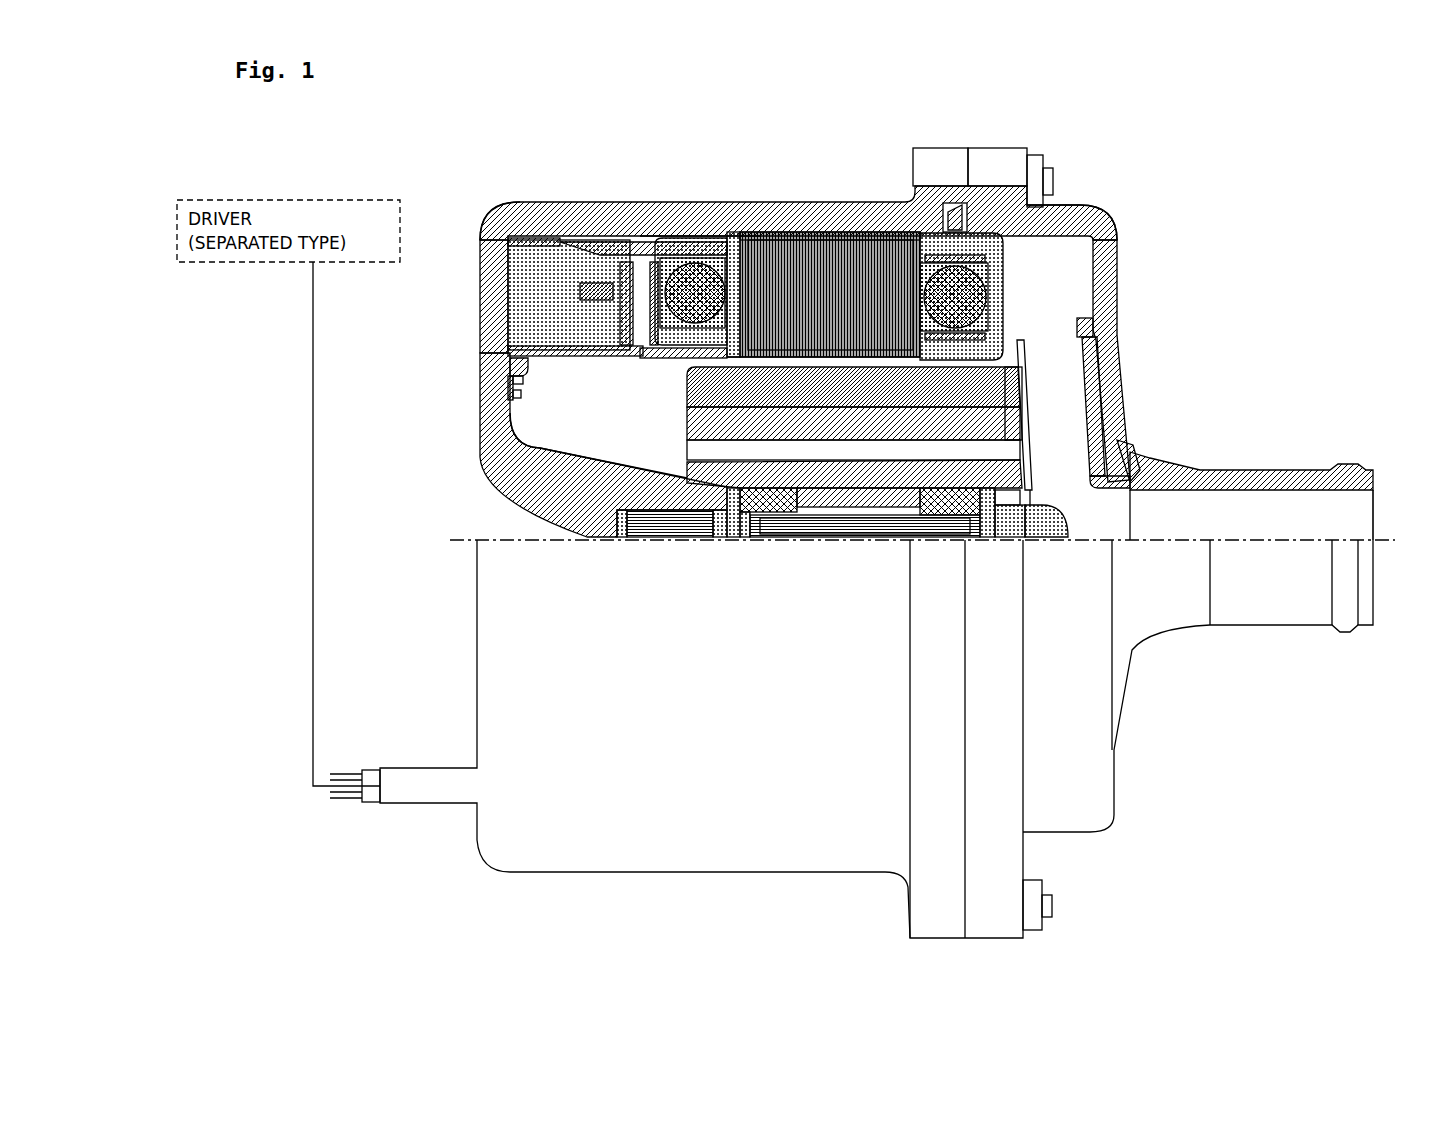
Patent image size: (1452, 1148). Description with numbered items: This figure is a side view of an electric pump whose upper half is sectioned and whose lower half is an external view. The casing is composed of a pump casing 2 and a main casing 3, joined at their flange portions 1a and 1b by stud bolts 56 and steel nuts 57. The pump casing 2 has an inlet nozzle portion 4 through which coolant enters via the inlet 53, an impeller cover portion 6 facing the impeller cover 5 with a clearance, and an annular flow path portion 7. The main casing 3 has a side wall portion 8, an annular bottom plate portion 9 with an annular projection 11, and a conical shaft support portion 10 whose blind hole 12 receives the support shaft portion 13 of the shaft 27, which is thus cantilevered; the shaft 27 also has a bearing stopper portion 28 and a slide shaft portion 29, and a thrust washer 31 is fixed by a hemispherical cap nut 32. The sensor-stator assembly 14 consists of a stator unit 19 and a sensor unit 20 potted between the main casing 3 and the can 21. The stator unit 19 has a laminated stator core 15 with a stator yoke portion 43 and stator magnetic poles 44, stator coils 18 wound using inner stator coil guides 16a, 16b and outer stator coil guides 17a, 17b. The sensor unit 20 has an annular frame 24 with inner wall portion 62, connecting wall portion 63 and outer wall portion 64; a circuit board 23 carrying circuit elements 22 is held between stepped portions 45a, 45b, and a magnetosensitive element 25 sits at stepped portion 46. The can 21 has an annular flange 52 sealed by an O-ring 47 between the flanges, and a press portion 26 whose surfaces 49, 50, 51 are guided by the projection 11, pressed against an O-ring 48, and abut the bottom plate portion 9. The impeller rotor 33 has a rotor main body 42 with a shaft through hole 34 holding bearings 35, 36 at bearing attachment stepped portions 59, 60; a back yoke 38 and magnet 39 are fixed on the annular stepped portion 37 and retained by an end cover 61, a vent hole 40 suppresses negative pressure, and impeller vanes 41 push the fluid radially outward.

The flange portion 1a is at (1000, 148).
The flange portion 1b is at (927, 148).
The pump casing 2 is at (1143, 325).
The main casing 3 is at (540, 178).
The inlet nozzle portion 4 is at (1293, 470).
The impeller cover 5 is at (1130, 425).
The impeller cover portion 6 is at (1125, 410).
The annular flow path portion 7 is at (1113, 234).
The side wall portion 8 is at (697, 234).
The bottom plate portion 9 is at (480, 335).
The shaft support portion 10 is at (532, 480).
The annular projection 11 is at (490, 348).
The blind hole 12 is at (614, 540).
The support shaft portion 13 is at (660, 518).
The sensor-stator assembly 14 is at (850, 142).
The stator core 15 is at (790, 234).
The inner stator coil guide 16a is at (990, 339).
The inner stator coil guide 16b is at (676, 238).
The outer stator coil guide 17a is at (992, 250).
The outer stator coil guide 17b is at (606, 236).
The stator coils 18 is at (988, 292).
The stator unit 19 is at (847, 232).
The sensor unit 20 is at (730, 234).
The can 21 is at (1012, 222).
The circuit elements 22 is at (600, 290).
The circuit board 23 is at (625, 312).
The annular frame 24 is at (378, 405).
The magnetosensitive element 25 is at (665, 356).
The press portion 26 is at (590, 390).
The shaft 27 is at (785, 562).
The bearing stopper portion 28 is at (735, 530).
The slide shaft portion 29 is at (838, 530).
The thrust washer 31 is at (992, 540).
The cap nut 32 is at (1030, 545).
The impeller rotor 33 is at (1312, 268).
The shaft through hole 34 is at (880, 522).
The bearing 35 is at (945, 540).
The bearing 36 is at (745, 528).
The annular stepped portion 37 is at (1020, 400).
The back yoke 38 is at (687, 428).
The magnet 39 is at (687, 403).
The vent hole 40 is at (985, 453).
The impeller vanes 41 is at (1100, 386).
The rotor main body 42 is at (1020, 426).
The stator yoke portion 43 is at (822, 242).
The stator magnetic poles 44 is at (882, 232).
The stepped portion 45a is at (500, 218).
The stepped portion 45b is at (557, 333).
The stepped portion 46 is at (690, 358).
The O-ring 47 is at (965, 205).
The O-ring 48 is at (505, 367).
The surface 49 is at (530, 366).
The surface 50 is at (524, 378).
The surface 51 is at (520, 398).
The annular flange 52 is at (913, 183).
The inlet 53 is at (1376, 530).
The stud bolts 56 is at (1053, 176).
The steel nuts 57 is at (1037, 160).
The bearing attachment stepped portion 59 is at (920, 490).
The bearing attachment stepped portion 60 is at (790, 490).
The end cover 61 is at (813, 442).
The inner wall portion 62 is at (648, 352).
The connecting wall portion 63 is at (636, 242).
The outer wall portion 64 is at (482, 241).